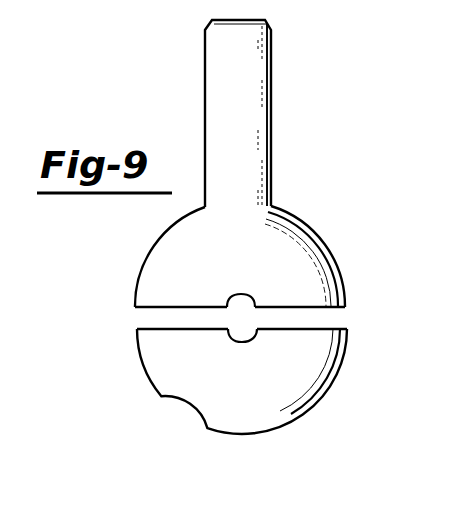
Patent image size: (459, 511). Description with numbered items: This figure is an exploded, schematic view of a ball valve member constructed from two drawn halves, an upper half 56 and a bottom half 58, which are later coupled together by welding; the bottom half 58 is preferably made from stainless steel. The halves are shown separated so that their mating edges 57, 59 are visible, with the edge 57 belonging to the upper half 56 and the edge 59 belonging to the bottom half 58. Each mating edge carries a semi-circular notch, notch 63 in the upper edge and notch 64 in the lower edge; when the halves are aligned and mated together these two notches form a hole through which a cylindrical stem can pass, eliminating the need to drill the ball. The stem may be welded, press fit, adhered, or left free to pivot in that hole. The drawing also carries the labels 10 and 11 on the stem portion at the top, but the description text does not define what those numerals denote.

The ball joint assembly 10 is at (214, 71).
The shaft 11 is at (292, 93).
The drawn half 56 is at (288, 257).
The mating edge 57 is at (324, 310).
The bottom half 58 is at (288, 400).
The mating edge 59 is at (161, 327).
The semi-circular notch 63 is at (240, 298).
The semi-circular notch 64 is at (240, 337).